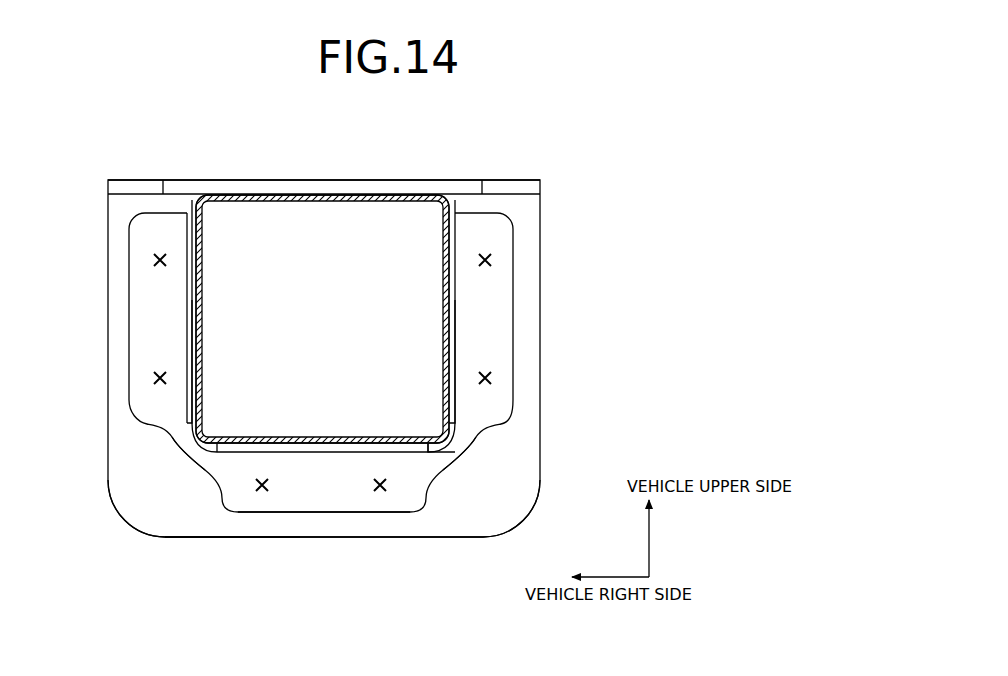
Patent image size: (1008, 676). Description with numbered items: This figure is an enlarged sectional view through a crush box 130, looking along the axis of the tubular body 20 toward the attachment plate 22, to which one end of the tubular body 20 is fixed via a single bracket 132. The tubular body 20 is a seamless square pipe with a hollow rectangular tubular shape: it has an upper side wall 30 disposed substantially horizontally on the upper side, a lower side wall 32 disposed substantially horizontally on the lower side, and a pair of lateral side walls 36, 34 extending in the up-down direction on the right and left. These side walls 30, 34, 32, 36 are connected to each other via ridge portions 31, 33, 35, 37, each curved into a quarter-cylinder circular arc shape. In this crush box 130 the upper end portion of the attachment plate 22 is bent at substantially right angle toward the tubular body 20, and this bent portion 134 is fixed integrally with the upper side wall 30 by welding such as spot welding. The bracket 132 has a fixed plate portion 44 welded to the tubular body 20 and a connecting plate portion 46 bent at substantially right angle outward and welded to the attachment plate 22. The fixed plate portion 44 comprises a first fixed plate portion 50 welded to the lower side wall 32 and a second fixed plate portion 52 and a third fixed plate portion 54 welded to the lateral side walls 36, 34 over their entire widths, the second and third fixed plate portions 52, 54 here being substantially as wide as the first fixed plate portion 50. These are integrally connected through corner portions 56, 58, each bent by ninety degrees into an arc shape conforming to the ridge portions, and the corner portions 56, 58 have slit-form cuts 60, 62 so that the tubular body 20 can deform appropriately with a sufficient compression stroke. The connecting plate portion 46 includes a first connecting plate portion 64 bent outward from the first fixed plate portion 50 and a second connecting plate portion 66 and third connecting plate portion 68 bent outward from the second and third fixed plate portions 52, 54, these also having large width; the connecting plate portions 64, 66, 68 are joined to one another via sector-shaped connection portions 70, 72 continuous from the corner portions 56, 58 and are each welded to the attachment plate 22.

The crush box 130 is at (606, 169).
The bent portion 134 is at (247, 190).
The tubular body 20 is at (355, 184).
The upper side wall 30 is at (305, 203).
The ridge portion 31 is at (440, 203).
The lower side wall 32 is at (305, 437).
The ridge portion 33 is at (440, 440).
The lateral side wall 34 is at (443, 315).
The ridge portion 35 is at (208, 440).
The lateral side wall 36 is at (201, 314).
The ridge portion 37 is at (208, 203).
The fixed plate portion 44 is at (184, 299).
The connecting plate portion 46 is at (505, 201).
The first fixed plate portion 50 is at (317, 452).
The second fixed plate portion 52 is at (192, 333).
The third fixed plate portion 54 is at (453, 337).
The corner portion 56 is at (188, 452).
The corner portion 58 is at (460, 447).
The cut 60 is at (178, 438).
The cut 62 is at (443, 453).
The first connecting plate portion 64 is at (285, 503).
The second connecting plate portion 66 is at (143, 318).
The third connecting plate portion 68 is at (503, 301).
The sector-shaped connection portion 70 is at (186, 454).
The sector-shaped connection portion 72 is at (465, 446).
The attachment plate 22 is at (392, 525).
The bracket 132 is at (204, 511).